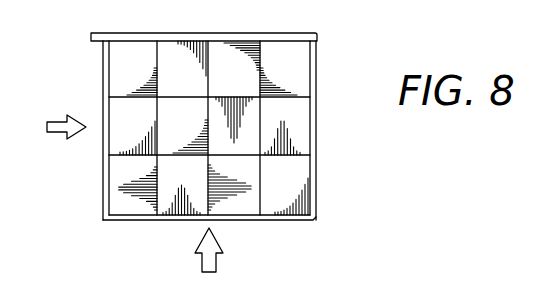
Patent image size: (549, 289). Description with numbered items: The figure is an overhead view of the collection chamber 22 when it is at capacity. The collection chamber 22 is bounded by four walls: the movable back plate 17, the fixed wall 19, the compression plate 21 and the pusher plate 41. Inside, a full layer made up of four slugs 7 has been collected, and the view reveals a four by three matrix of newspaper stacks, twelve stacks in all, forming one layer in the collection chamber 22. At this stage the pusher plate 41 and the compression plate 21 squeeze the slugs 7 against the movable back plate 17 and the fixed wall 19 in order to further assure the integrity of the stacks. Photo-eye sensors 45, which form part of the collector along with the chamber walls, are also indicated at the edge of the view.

The collection chamber 22 is at (227, 142).
The fixed wall 19 is at (181, 33).
The movable back plate 17 is at (316, 137).
The pusher plate 41 is at (103, 184).
The compression plate 21 is at (268, 221).
The slug 7 is at (177, 187).
The photo-eye sensors 45 is at (518, 277).